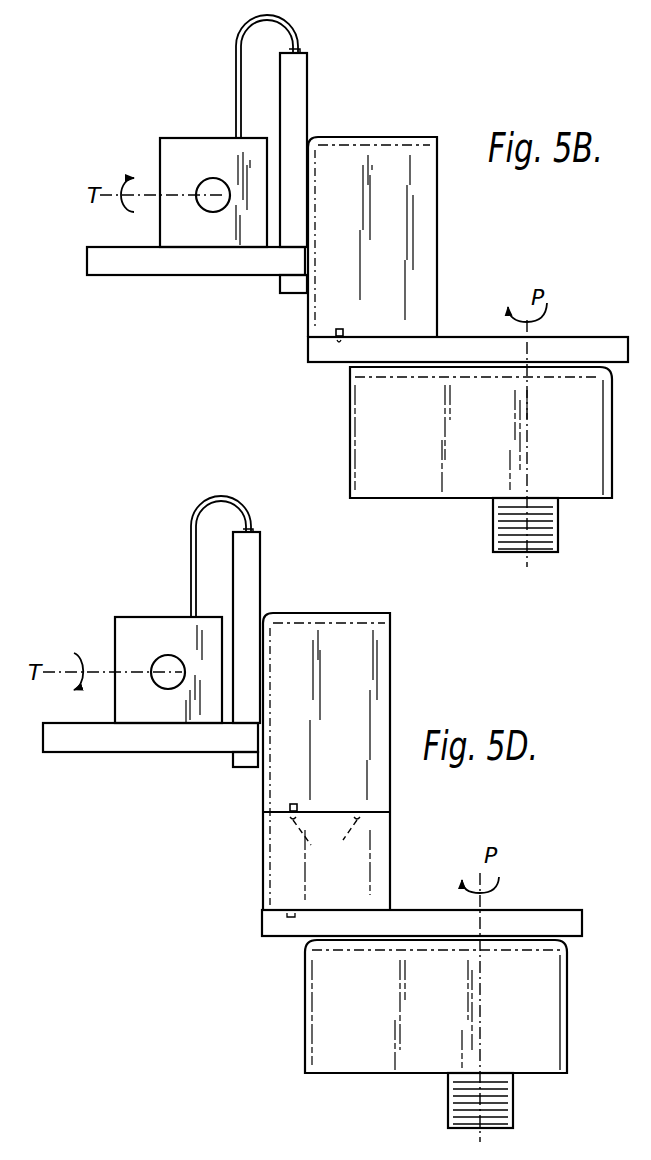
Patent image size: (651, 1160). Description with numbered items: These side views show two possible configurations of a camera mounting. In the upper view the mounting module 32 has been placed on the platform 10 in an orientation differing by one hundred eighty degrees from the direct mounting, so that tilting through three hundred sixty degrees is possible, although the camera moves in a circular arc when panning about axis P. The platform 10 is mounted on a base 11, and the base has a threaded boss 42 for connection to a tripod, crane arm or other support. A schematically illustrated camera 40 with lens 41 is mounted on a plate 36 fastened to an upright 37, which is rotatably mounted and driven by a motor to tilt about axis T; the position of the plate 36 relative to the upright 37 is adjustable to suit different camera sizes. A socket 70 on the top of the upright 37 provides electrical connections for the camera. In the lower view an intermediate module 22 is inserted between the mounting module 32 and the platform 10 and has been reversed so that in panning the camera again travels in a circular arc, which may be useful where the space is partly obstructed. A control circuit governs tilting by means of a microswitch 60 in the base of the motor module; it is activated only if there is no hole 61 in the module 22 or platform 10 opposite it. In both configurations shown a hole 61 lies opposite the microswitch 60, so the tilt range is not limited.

In FIG. 5B, the platform 10 is at (577, 345).
In FIG. 5D, the platform 10 is at (518, 917).
In FIG. 5B, the base 11 is at (598, 393).
In FIG. 5D, the base 11 is at (318, 970).
In FIG. 5D, the intermediate module 22 is at (282, 852).
In FIG. 5B, the mounting module 32 is at (440, 235).
In FIG. 5D, the mounting module 32 is at (397, 668).
In FIG. 5B, the plate 36 is at (172, 263).
In FIG. 5D, the plate 36 is at (142, 743).
In FIG. 5B, the upright 37 is at (300, 105).
In FIG. 5D, the upright 37 is at (260, 563).
In FIG. 5B, the camera 40 is at (208, 143).
In FIG. 5D, the camera 40 is at (143, 620).
In FIG. 5B, the lens 41 is at (213, 207).
In FIG. 5D, the lens 41 is at (158, 658).
In FIG. 5B, the threaded boss 42 is at (560, 537).
In FIG. 5D, the threaded boss 42 is at (447, 1095).
In FIG. 5B, the microswitch 60 is at (343, 330).
In FIG. 5D, the microswitch 60 is at (297, 805).
In FIG. 5B, the hole 61 is at (338, 343).
In FIG. 5D, the hole 61 is at (325, 838).
In FIG. 5B, the socket 70 is at (287, 50).
In FIG. 5D, the socket 70 is at (252, 530).